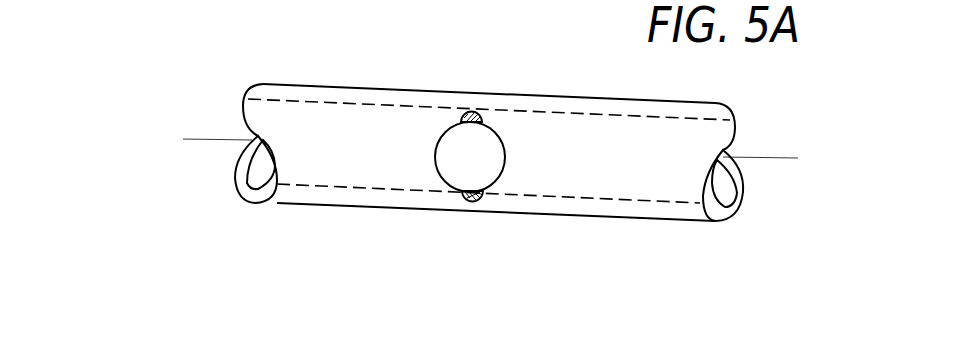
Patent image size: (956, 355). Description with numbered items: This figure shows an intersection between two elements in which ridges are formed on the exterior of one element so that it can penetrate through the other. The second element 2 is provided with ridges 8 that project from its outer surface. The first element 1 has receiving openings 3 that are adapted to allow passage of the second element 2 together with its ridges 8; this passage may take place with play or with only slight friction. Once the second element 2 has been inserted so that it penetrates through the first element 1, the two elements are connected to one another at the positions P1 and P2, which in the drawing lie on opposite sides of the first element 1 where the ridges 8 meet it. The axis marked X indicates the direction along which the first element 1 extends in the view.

The first element 1 is at (489, 152).
The second element 2 is at (480, 150).
The receiving openings 3 is at (437, 145).
The ridges 8 is at (490, 109).
The connection position P1 is at (461, 93).
The connection position P2 is at (472, 201).
The longitudinal axis X is at (504, 160).